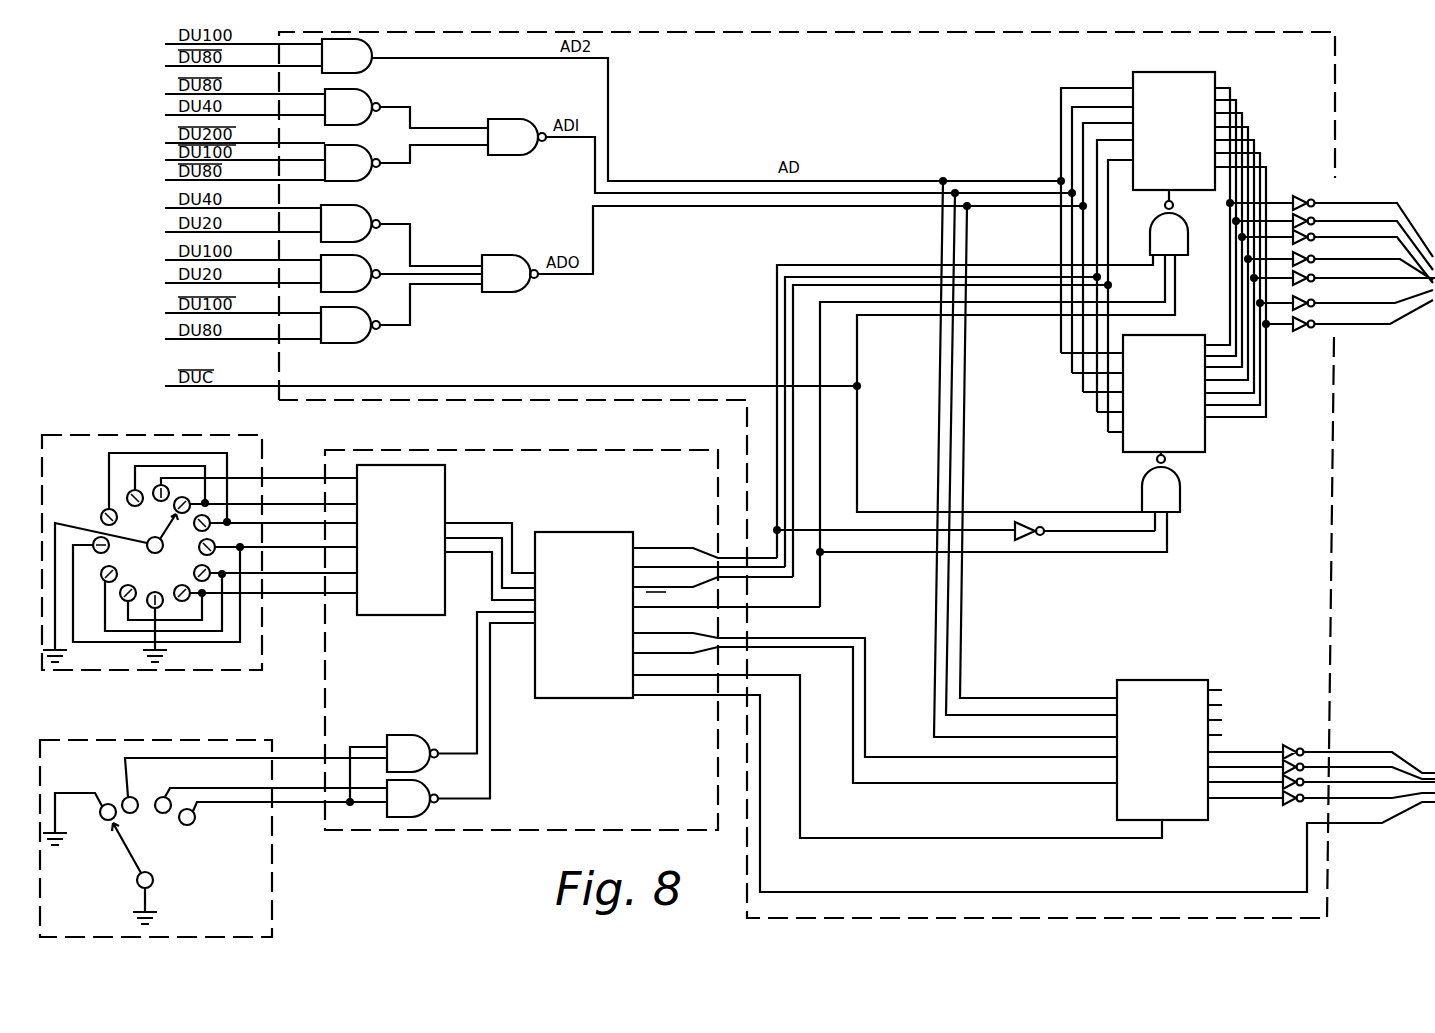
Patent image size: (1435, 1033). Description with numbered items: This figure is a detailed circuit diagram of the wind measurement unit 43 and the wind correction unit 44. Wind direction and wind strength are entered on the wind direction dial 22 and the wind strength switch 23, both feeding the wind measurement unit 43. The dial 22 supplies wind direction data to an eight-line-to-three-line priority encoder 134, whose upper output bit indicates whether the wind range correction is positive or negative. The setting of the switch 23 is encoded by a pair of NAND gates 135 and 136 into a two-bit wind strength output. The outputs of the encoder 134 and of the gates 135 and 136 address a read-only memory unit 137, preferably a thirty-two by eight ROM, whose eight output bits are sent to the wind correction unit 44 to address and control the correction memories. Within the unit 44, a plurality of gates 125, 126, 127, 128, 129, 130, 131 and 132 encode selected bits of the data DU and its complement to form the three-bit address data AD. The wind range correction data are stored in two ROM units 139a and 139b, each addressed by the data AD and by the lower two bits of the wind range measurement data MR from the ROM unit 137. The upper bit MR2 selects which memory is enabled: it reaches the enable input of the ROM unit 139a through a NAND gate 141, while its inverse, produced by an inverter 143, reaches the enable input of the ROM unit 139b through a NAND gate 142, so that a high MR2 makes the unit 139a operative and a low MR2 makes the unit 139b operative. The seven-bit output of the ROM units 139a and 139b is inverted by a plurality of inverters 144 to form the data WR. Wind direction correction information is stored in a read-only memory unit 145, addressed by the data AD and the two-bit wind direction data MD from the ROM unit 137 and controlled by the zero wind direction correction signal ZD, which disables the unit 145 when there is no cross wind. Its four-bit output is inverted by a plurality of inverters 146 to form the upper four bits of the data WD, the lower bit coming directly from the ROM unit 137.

The wind direction dial 22 is at (242, 672).
The wind strength switch 23 is at (272, 900).
The wind measurement unit 43 is at (525, 838).
The wind correction unit 44 is at (945, 35).
The gate 125 is at (374, 69).
The gate 126 is at (366, 125).
The gate 127 is at (366, 181).
The gate 128 is at (527, 155).
The gate 129 is at (366, 242).
The gate 130 is at (366, 292).
The gate 131 is at (366, 343).
The gate 132 is at (518, 292).
The priority encoder 134 is at (402, 616).
The NAND gate 135 is at (415, 735).
The NAND gate 136 is at (434, 810).
The read-only memory unit 137 is at (615, 700).
The ROM unit 139a is at (1200, 80).
The ROM unit 139b is at (1203, 452).
The NAND gate 141 is at (1186, 225).
The NAND gate 142 is at (1180, 497).
The inverter 143 is at (1033, 548).
The inverters 144 is at (1303, 338).
The read-only memory unit 145 is at (1190, 678).
The inverters 146 is at (1293, 746).